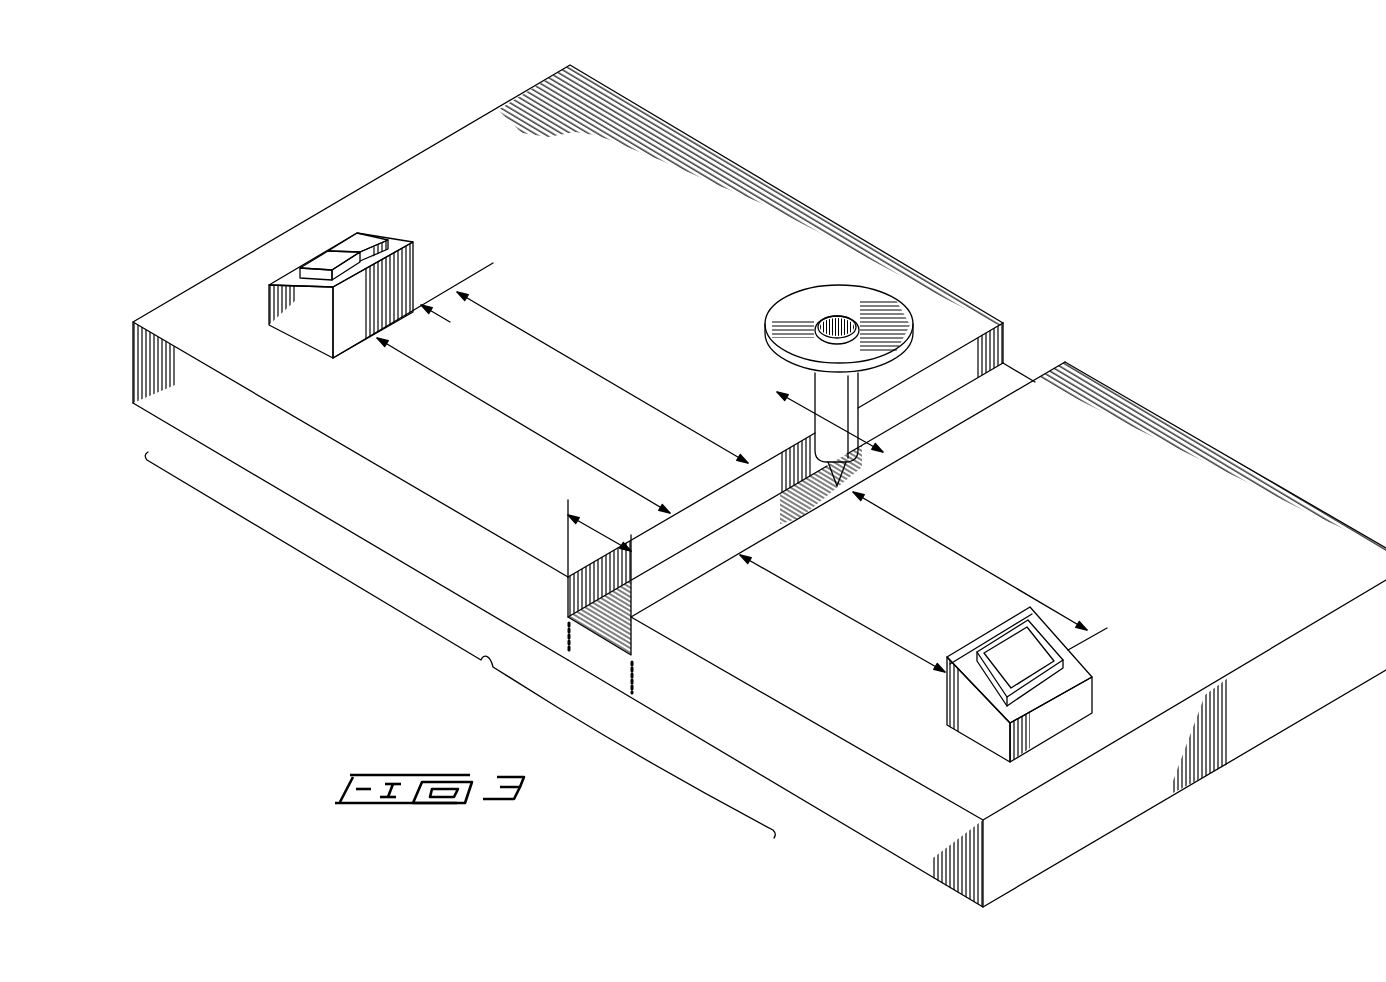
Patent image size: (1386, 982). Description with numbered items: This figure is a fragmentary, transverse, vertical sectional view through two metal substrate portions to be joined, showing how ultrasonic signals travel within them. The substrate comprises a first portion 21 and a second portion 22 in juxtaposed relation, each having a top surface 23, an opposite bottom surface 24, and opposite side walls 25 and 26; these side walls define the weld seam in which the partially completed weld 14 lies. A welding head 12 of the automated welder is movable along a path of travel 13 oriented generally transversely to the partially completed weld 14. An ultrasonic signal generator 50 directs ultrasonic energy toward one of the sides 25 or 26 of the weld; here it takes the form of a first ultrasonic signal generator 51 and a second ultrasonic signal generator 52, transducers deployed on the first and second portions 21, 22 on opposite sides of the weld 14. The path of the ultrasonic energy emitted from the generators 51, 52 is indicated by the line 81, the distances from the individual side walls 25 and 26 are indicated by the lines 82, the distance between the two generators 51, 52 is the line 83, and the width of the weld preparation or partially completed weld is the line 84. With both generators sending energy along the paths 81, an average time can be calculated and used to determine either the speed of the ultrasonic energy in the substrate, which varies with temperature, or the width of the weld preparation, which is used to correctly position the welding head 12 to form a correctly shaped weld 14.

The welding head 12 is at (818, 296).
The path of travel 13 is at (807, 400).
The partially completed weld 14 is at (605, 659).
The first portion 21 is at (749, 754).
The second portion 22 is at (385, 517).
The top surface 23 is at (615, 242).
The bottom surface 24 is at (142, 406).
The side wall 25 is at (1017, 382).
The side wall 26 is at (767, 466).
The ultrasonic signal generator 50 is at (434, 222).
The first ultrasonic signal generator 51 is at (1078, 705).
The second ultrasonic signal generator 52 is at (410, 273).
The path of ultrasonic energy 81 is at (488, 405).
The distances from side walls 82 is at (560, 352).
The distance between ultrasonic generators 83 is at (460, 645).
The width of weld preparation 84 is at (597, 523).